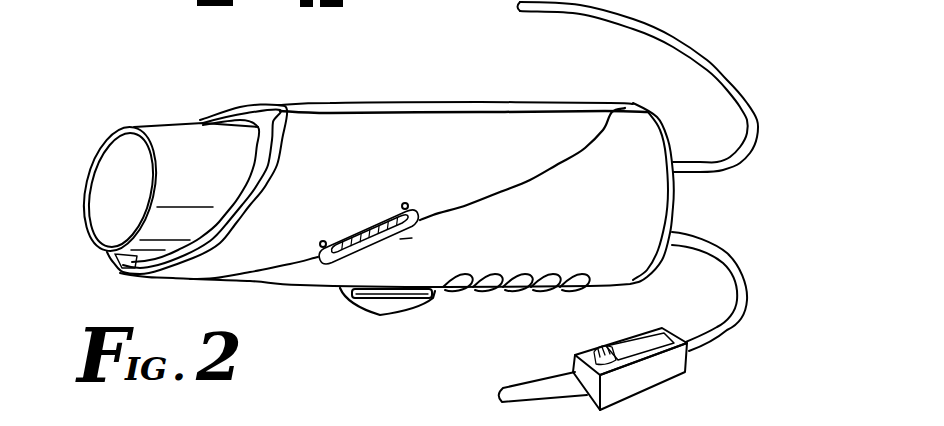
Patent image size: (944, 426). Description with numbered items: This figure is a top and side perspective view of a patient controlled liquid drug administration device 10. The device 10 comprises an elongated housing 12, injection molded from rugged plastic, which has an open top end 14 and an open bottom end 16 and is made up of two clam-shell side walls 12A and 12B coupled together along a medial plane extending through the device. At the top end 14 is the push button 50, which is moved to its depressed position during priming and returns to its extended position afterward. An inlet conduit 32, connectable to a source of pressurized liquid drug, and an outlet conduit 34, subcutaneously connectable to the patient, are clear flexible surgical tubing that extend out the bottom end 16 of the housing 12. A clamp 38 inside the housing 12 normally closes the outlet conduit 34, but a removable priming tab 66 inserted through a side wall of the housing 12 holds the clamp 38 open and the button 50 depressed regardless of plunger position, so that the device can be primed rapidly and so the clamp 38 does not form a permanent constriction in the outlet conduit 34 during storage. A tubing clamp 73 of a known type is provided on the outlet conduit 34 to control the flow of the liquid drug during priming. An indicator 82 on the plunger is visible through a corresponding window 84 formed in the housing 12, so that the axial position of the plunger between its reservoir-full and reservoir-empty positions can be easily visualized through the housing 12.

The patient controlled liquid drug administration device 10 is at (412, 84).
The elongated housing 12 is at (613, 103).
The clam-shell side wall 12A is at (333, 140).
The clam-shell side wall 12B is at (377, 105).
The open top end 14 is at (200, 122).
The open bottom end 16 is at (677, 208).
The inlet conduit 32 is at (677, 37).
The outlet conduit 34 is at (733, 252).
The clamp 38 is at (450, 399).
The push button 50 is at (107, 165).
The priming tab 66 is at (397, 308).
The tubing clamp 73 is at (645, 380).
The indicator 82 is at (367, 222).
The window 84 is at (400, 239).